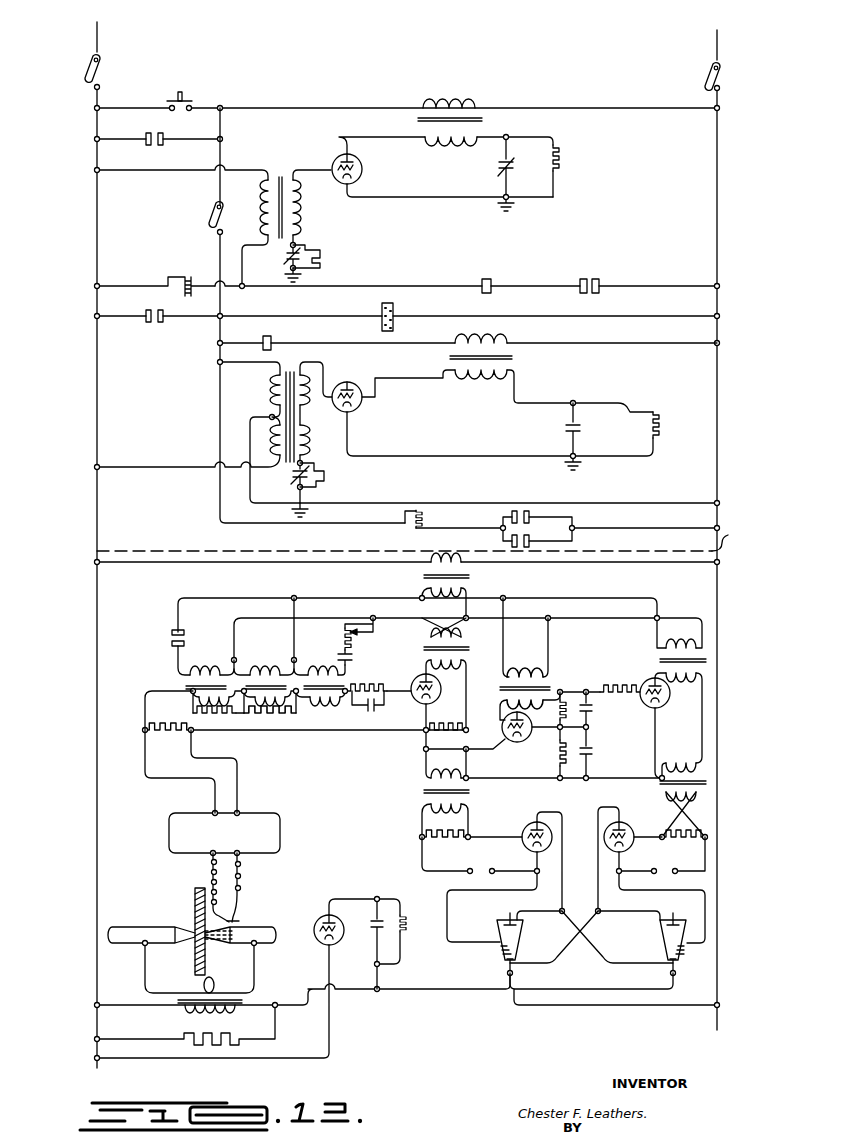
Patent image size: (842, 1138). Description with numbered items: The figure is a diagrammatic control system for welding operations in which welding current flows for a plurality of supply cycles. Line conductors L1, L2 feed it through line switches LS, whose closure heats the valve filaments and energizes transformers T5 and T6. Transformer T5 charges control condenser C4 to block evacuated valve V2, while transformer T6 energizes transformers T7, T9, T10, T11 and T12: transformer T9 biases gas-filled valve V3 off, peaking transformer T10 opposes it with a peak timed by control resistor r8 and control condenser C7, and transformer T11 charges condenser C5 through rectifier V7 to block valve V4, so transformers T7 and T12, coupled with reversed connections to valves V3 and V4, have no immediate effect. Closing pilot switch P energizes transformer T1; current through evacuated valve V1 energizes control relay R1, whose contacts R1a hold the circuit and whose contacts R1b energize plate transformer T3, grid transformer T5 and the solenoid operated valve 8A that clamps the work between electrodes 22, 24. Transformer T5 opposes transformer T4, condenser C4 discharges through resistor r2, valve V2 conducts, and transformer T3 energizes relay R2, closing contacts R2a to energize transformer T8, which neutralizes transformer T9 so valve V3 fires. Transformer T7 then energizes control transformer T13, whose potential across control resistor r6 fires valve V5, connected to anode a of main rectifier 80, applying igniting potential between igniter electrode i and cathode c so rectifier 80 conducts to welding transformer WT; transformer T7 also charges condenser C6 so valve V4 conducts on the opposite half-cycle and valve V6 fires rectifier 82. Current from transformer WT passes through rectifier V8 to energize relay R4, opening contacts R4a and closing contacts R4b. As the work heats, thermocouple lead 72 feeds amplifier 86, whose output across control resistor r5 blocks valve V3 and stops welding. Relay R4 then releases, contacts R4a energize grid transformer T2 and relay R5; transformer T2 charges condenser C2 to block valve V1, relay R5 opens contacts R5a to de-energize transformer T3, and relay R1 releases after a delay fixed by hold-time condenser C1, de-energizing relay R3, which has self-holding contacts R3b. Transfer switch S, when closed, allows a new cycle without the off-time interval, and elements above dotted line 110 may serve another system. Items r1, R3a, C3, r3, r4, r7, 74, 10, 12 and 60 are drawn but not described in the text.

The alternating current line conductor L1 is at (90, 44).
The alternating current line conductor L2 is at (720, 38).
The line switch LS is at (84, 74).
The pilot switch P is at (185, 91).
The contact members of relay R1 R1a is at (154, 134).
The transformer T1 is at (466, 104).
The electronic valve V1 is at (362, 170).
The hold-time condenser C1 is at (514, 173).
The control relay R1 is at (562, 156).
The grid transformer T2 is at (284, 158).
The transfer switch S is at (205, 219).
The condenser C2 is at (284, 262).
The resistor r1 is at (320, 260).
The relay R5 is at (190, 276).
The contact members of relay R1 R1b is at (154, 311).
The contacts of relay R4 R4a is at (490, 275).
The rectifier R3a is at (598, 277).
The solenoid operated valve 8A is at (396, 305).
The contacts of relay R5 R5a is at (271, 337).
The plate transformer T3 is at (512, 360).
The transformer T4 is at (270, 388).
The electronic valve V2 is at (362, 399).
The capacitor C3 is at (565, 431).
The control relay R2 is at (663, 421).
The grid transformer T5 is at (312, 448).
The control condenser C4 is at (289, 484).
The resistor r2 is at (324, 482).
The relay R3 is at (425, 519).
The self-holding contacts of relay R3 R3b is at (550, 511).
The contacts of relay R4 R4b is at (550, 544).
The dividing line 60 is at (82, 548).
The horizontal dotted line 110 is at (728, 535).
The transformer T6 is at (462, 577).
The contact members of relay R2 R2a is at (170, 640).
The transformer T8 is at (214, 662).
The transformer T9 is at (270, 658).
The peaking transformer T10 is at (330, 661).
The control resistor r8 is at (353, 643).
The control condenser C7 is at (353, 659).
The transformer T7 is at (470, 651).
The electronic valve V3 is at (445, 705).
The transformer T11 is at (538, 677).
The rectifier V7 is at (502, 733).
The resistor r3 is at (557, 712).
The condenser C5 is at (592, 708).
The resistor r4 is at (558, 761).
The condenser C6 is at (592, 753).
The transformer T12 is at (662, 646).
The electronic valve V4 is at (663, 695).
The control transformer T13 is at (422, 797).
The control resistor r6 is at (450, 834).
The electronic valve V5 is at (532, 823).
The electronic valve V6 is at (622, 823).
The resistor r7 is at (682, 835).
The control resistor r5 is at (174, 727).
The amplifier 86 is at (280, 816).
The coil 74 is at (204, 869).
The thermocouple lead 72 is at (246, 877).
The workpiece 12 is at (162, 926).
The workpiece 10 is at (251, 927).
The electrode 22 is at (194, 963).
The electrode 24 is at (211, 956).
The welding transformer WT is at (202, 989).
The rectifier V8 is at (326, 912).
The control relay R4 is at (404, 916).
The anode a is at (510, 913).
The main rectifier 80 is at (522, 922).
The igniter electrode i is at (520, 946).
The cathode c is at (514, 964).
The main rectifier 82 is at (660, 936).